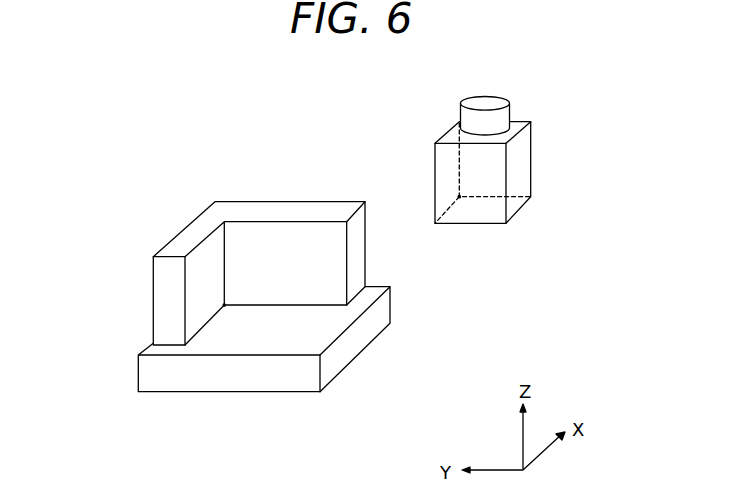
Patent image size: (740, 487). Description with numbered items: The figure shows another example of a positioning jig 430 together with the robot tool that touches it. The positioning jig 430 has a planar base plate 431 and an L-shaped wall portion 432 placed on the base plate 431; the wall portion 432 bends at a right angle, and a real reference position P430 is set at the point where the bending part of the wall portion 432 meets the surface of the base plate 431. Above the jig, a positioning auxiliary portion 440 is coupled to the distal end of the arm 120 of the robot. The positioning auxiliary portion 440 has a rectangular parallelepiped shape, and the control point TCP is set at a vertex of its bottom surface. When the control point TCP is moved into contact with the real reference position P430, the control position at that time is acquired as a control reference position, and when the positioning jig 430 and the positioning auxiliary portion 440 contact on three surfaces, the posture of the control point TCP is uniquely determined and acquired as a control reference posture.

The positioning jig 430 is at (232, 284).
The base plate 431 is at (137, 378).
The wall portion 432 is at (152, 300).
The real reference position P430 is at (224, 305).
The positioning auxiliary portion 440 is at (531, 167).
The arm 120 is at (512, 110).
The control point TCP is at (458, 196).